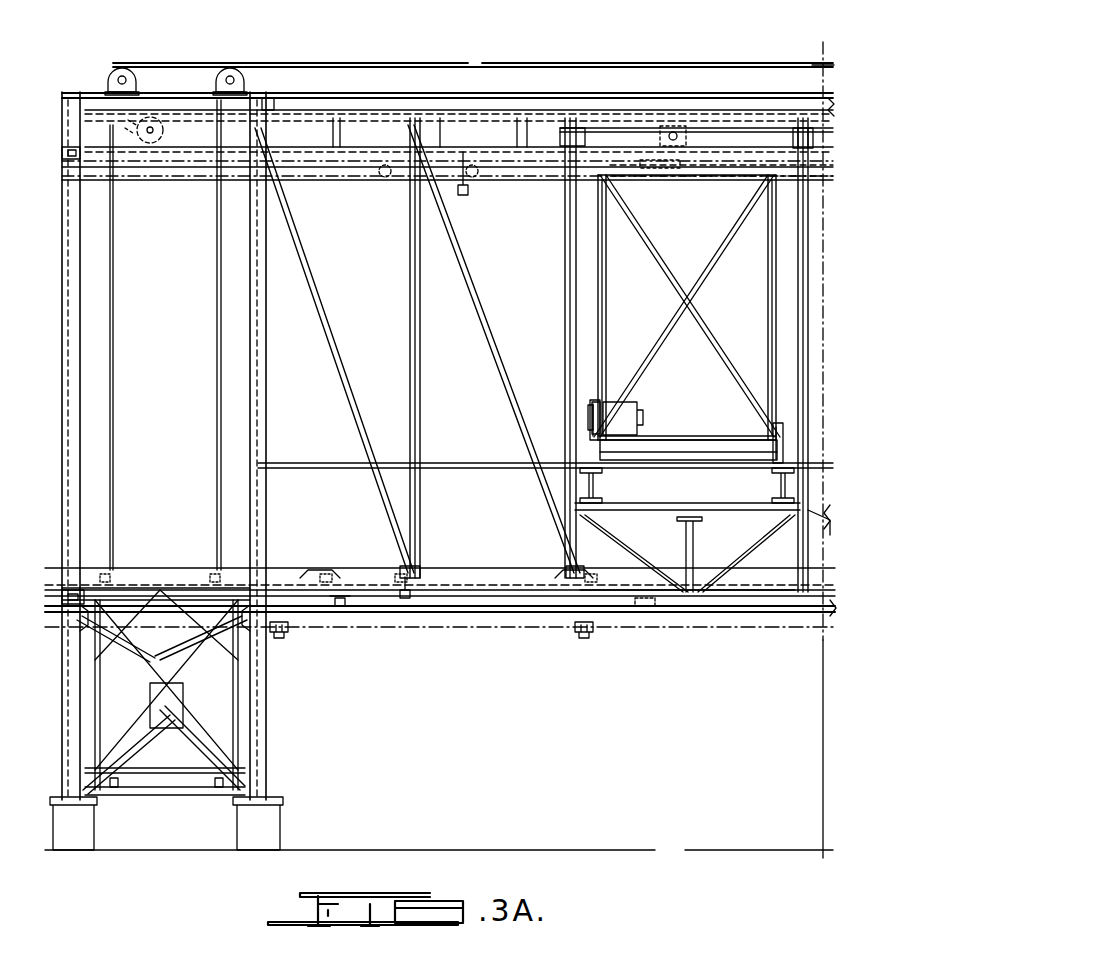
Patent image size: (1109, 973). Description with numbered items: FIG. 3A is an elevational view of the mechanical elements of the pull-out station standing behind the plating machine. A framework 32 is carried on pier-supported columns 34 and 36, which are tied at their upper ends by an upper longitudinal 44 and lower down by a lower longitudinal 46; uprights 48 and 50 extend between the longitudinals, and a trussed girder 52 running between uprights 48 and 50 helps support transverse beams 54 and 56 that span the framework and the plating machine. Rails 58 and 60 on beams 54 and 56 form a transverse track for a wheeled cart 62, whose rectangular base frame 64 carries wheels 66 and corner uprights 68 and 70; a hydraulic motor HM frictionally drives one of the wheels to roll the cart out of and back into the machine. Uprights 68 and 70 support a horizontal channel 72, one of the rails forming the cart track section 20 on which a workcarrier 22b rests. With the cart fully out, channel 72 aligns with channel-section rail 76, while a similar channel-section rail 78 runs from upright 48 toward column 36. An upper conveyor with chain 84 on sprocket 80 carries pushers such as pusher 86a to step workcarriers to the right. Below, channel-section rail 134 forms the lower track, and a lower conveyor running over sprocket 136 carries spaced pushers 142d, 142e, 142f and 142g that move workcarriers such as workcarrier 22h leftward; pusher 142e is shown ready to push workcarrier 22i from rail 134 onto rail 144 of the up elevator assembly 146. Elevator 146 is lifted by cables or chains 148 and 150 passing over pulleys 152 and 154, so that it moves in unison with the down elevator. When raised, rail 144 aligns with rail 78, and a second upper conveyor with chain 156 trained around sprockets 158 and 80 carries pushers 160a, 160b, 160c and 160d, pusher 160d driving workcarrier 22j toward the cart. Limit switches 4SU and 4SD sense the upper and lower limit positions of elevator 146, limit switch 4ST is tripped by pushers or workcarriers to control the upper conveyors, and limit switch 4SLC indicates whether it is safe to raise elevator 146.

The track section 20 is at (735, 194).
The workcarrier 22b is at (670, 196).
The strut foot 22h is at (558, 570).
The workcarrier 22i is at (314, 569).
The workcarrier 22j is at (442, 166).
The framework 32 is at (63, 493).
The column 34 is at (104, 694).
The column 36 is at (265, 751).
The upper longitudinal 44 is at (347, 86).
The lower longitudinal 46 is at (760, 614).
The upright 48 is at (574, 348).
The upright 50 is at (802, 368).
The trussed girder 52 is at (632, 512).
The transverse beam 54 is at (595, 485).
The transverse beam 56 is at (793, 489).
The rail 58 is at (688, 460).
The rail 60 is at (772, 465).
The wheeled cart 62 is at (748, 301).
The base frame 64 is at (667, 426).
The wheels 66 is at (592, 441).
The upright 68 is at (608, 318).
The upright 70 is at (773, 321).
The channel 72 is at (630, 178).
The channel-section rail 76 is at (762, 216).
The channel-section rail 78 is at (545, 178).
The sprocket 80 is at (672, 108).
The conveyor chain 84 is at (762, 150).
The pusher 86a is at (690, 157).
The channel-section rail 134 is at (482, 573).
The sprocket 136 is at (160, 622).
The pusher 142d is at (653, 614).
The pusher 142e is at (350, 606).
The pusher 142f is at (276, 640).
The pusher 142g is at (583, 652).
The rail 144 is at (233, 168).
The up elevator assembly 146 is at (255, 712).
The cable or chain 148 is at (113, 458).
The cable or chain 150 is at (218, 518).
The pulley or sprocket 152 is at (129, 64).
The pulley or sprocket 154 is at (247, 68).
The chain 156 is at (272, 86).
The sprocket 158 is at (172, 118).
The pusher 160a is at (708, 110).
The pusher 160b is at (414, 110).
The pusher 160c is at (108, 108).
The pusher 160d is at (387, 168).
The limit switch 4SD is at (85, 597).
The limit switch 4SLC is at (385, 550).
The limit switch 4ST is at (462, 198).
The limit switch 4SU is at (78, 160).
The hydraulic motor HM is at (632, 403).